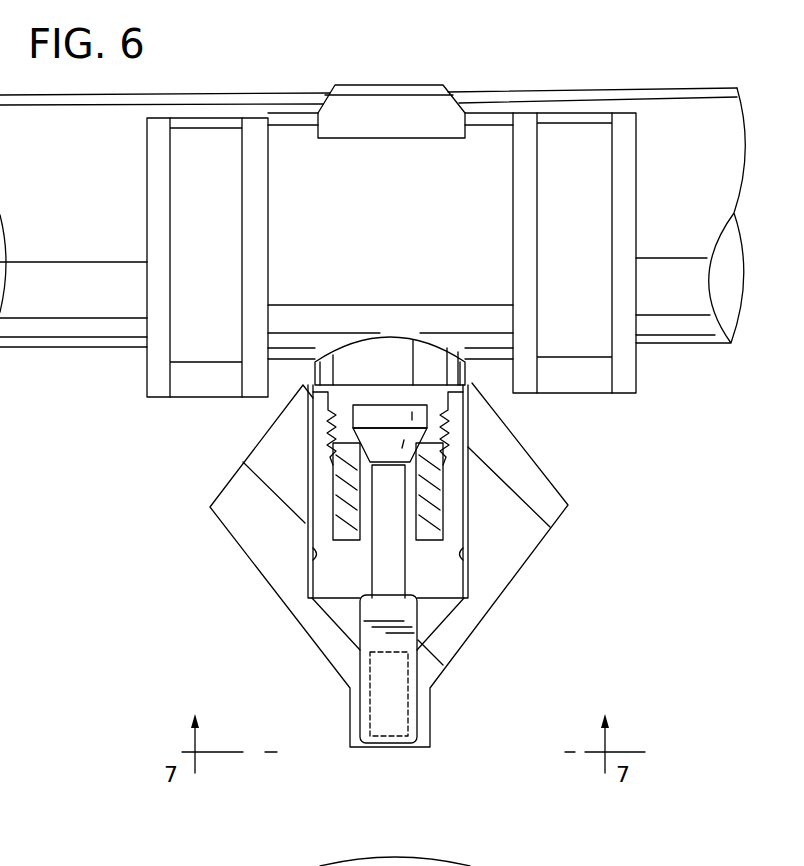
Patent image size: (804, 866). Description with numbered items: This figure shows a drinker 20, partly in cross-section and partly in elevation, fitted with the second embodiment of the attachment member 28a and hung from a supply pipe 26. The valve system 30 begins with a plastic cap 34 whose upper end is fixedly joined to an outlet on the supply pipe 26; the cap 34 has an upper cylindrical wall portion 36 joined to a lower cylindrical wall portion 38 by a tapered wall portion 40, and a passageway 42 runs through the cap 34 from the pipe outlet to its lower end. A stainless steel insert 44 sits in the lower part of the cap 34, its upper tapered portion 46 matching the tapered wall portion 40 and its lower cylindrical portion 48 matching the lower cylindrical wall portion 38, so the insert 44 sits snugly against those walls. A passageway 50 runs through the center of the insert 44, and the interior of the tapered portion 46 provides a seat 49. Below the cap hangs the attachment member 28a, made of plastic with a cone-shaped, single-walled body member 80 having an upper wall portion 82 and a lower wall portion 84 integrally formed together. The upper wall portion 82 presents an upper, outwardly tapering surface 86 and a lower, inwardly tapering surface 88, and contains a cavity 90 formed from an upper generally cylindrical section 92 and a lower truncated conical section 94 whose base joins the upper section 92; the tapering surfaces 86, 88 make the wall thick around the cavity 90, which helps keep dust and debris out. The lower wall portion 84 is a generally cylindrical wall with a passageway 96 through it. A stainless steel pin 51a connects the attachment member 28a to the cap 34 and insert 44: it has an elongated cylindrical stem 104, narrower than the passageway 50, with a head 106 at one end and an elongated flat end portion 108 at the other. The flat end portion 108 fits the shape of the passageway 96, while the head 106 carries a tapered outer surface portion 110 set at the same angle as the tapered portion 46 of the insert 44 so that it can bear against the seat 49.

The drinker 20 is at (592, 484).
The supply pipe 26 is at (77, 337).
The attachment member 28a is at (284, 612).
The valve system 30 is at (567, 503).
The cap 34 is at (476, 400).
The upper cylindrical wall portion 36 is at (457, 432).
The lower cylindrical wall portion 38 is at (455, 507).
The tapered wall portion 40 is at (460, 497).
The passageway 42 is at (337, 413).
The insert 44 is at (338, 516).
The upper tapered portion 46 is at (320, 462).
The lower cylindrical portion 48 is at (335, 497).
The seat 49 is at (468, 448).
The passageway 50 is at (360, 540).
The pin 51a is at (367, 576).
The body member 80 is at (205, 515).
The upper wall portion 82 is at (250, 527).
The lower wall portion 84 is at (352, 716).
The outwardly tapering surface 86 is at (545, 462).
The inwardly tapering surface 88 is at (550, 530).
The cavity 90 is at (475, 558).
The upper generally cylindrical section 92 is at (300, 566).
The lower truncated conical section 94 is at (335, 625).
The passageway 96 is at (402, 688).
The stem 104 is at (394, 553).
The head 106 is at (368, 422).
The flat end portion 108 is at (405, 738).
The tapered outer surface portion 110 is at (375, 458).